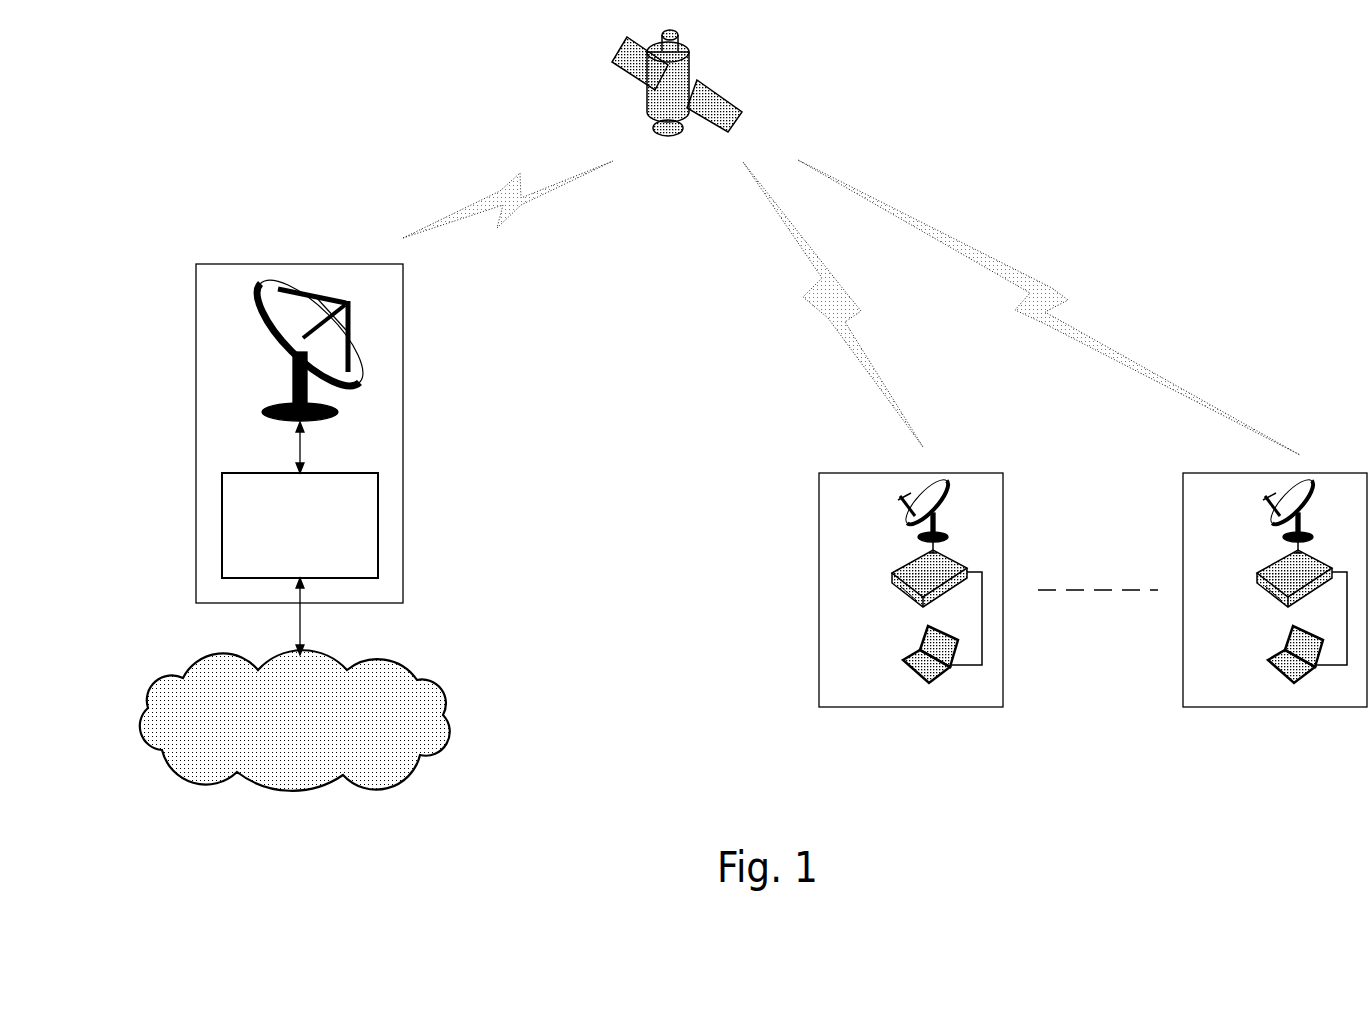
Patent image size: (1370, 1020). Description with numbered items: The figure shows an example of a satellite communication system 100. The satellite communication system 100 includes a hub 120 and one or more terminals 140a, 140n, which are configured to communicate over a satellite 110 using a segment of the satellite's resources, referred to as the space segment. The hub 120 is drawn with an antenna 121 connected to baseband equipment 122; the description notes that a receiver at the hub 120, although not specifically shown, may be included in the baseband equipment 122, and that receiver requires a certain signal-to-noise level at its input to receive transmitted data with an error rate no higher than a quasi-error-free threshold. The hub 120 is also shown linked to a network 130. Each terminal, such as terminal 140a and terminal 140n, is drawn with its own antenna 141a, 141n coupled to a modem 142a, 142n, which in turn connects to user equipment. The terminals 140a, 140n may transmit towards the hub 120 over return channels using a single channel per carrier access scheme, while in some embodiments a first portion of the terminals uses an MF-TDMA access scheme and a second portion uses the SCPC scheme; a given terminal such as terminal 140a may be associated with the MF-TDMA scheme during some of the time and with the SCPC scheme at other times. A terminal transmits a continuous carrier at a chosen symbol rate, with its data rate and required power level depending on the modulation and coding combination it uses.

The satellite communication system 100 is at (250, 108).
The satellite 110 is at (679, 83).
The hub 120 is at (299, 447).
The gateway antenna 121 is at (298, 343).
The baseband equipment 122 is at (300, 513).
The network 130 is at (295, 710).
The terminal 140a is at (911, 577).
The terminal antenna 141a is at (908, 513).
The modem 142a is at (901, 578).
The terminal 140n is at (1275, 577).
The terminal antenna 141n is at (1272, 513).
The modem 142n is at (1266, 578).